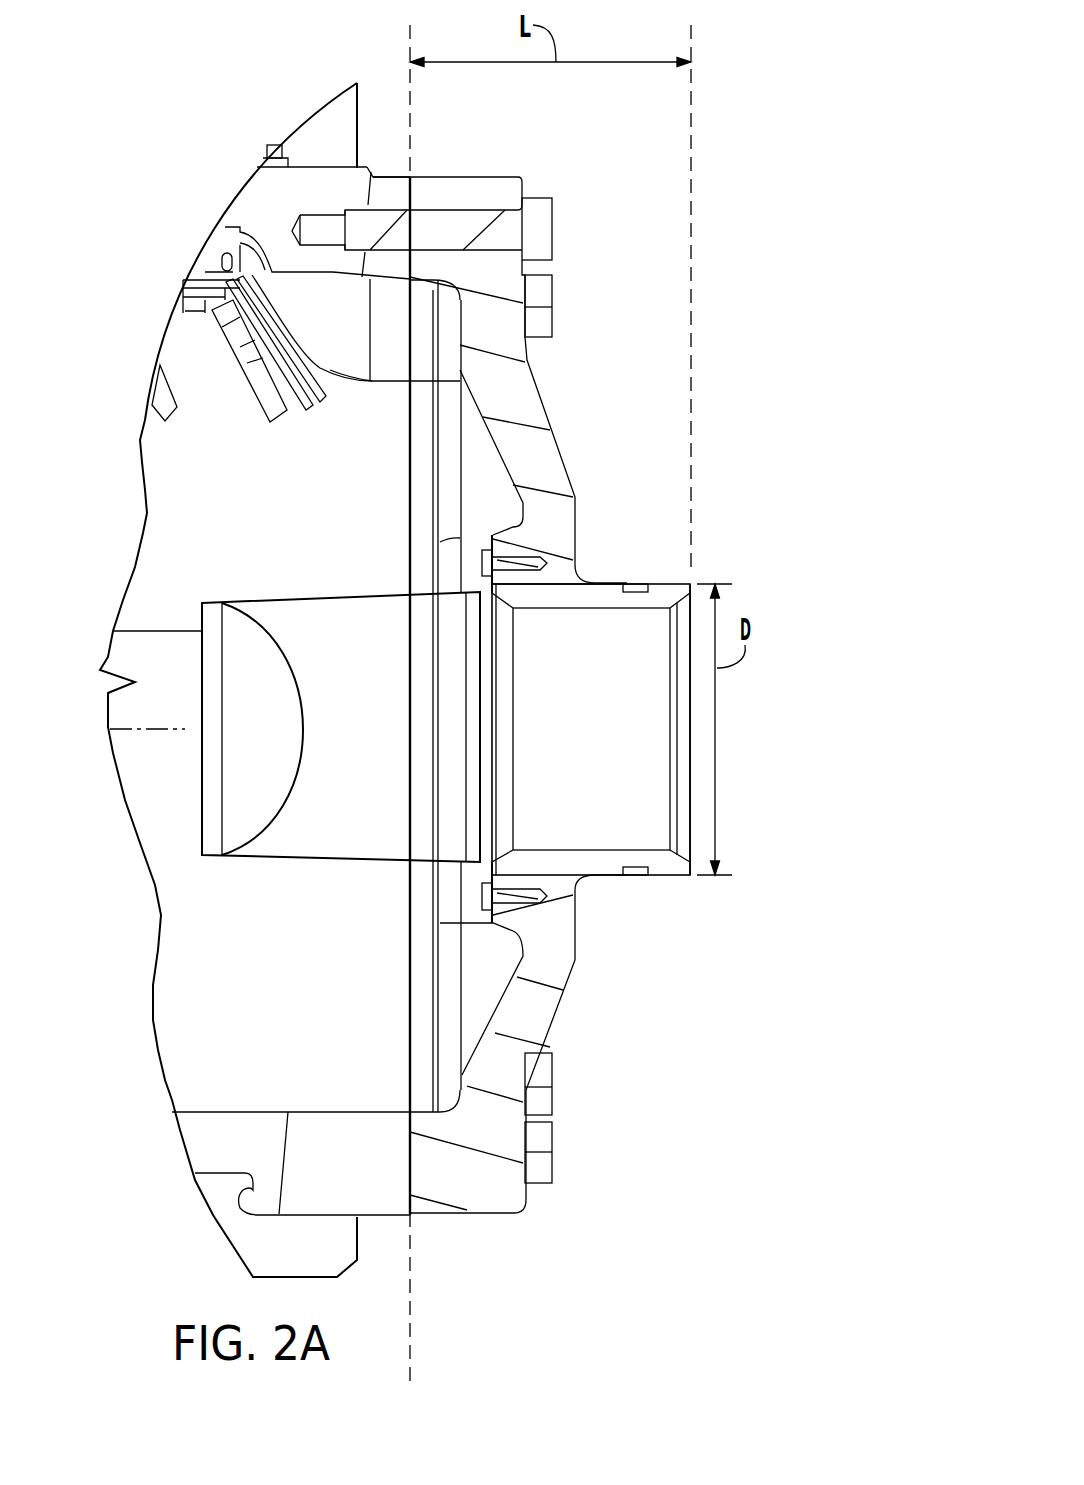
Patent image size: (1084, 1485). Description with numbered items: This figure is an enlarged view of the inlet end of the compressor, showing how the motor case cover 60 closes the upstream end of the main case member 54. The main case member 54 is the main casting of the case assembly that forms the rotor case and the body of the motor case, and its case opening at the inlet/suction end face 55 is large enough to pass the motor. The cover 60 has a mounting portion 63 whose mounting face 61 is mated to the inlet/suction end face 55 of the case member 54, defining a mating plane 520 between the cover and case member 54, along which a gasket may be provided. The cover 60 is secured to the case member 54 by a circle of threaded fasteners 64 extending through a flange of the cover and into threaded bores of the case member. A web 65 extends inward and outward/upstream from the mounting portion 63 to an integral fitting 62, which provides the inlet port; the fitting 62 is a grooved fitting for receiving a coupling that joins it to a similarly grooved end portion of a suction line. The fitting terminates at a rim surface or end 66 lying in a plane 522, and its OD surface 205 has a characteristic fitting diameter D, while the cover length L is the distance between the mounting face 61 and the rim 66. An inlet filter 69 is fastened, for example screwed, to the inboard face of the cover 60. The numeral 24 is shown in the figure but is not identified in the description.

The light emitting outlet 24 is at (703, 716).
The main case member 54 is at (200, 1147).
The inlet/suction end face 55 is at (410, 1175).
The motor case cover 60 is at (551, 1006).
The mounting face 61 is at (410, 1153).
The fitting 62 is at (671, 892).
The mounting portion 63 is at (498, 1190).
The threaded fastener 64 is at (568, 228).
The web 65 is at (538, 1026).
The rim surface 66 is at (694, 788).
The inlet filter 69 is at (294, 882).
The OD surface 205 is at (673, 582).
The mating plane 520 is at (410, 1335).
The plane of the rim surface 522 is at (692, 218).